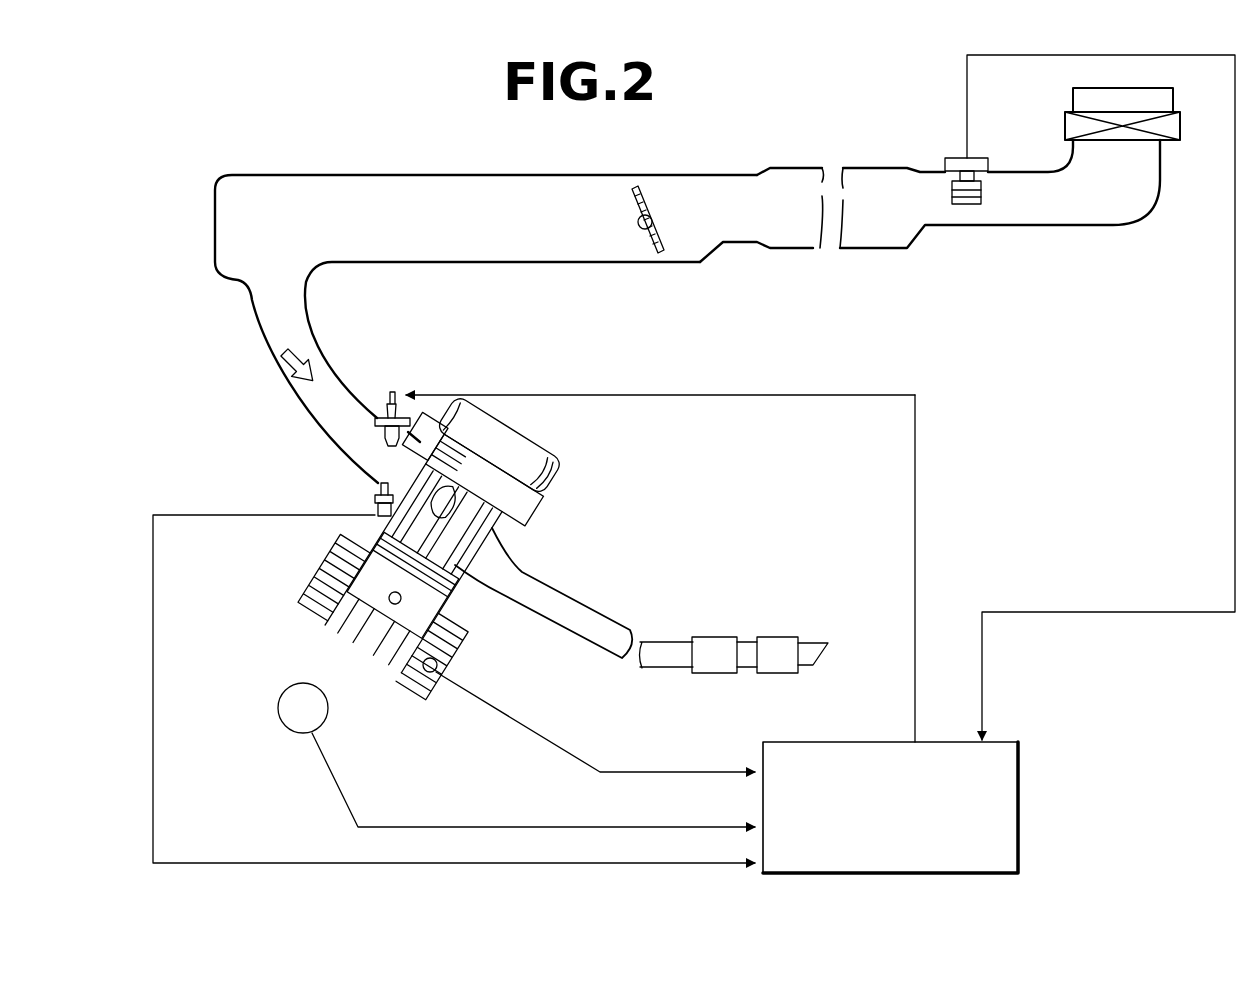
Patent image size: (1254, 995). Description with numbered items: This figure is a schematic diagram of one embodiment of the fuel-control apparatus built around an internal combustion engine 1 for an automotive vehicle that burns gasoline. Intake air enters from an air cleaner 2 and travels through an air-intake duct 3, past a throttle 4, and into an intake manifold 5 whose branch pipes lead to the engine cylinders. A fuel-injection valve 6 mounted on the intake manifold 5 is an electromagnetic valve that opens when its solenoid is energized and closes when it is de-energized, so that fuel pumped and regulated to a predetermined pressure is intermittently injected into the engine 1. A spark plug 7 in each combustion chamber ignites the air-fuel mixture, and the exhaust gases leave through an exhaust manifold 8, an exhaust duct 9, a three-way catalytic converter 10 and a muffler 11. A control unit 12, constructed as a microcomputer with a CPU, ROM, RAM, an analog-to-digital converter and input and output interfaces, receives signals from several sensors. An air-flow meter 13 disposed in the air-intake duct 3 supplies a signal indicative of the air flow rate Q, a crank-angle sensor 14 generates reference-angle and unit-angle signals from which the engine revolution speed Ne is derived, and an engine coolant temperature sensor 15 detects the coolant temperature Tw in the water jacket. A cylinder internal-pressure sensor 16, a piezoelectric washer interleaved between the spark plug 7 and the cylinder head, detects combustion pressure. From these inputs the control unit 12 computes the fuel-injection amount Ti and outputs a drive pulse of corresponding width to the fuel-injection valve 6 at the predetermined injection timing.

The internal combustion engine 1 is at (558, 529).
The air cleaner 2 is at (1180, 125).
The air-intake duct 3 is at (873, 167).
The throttle 4 is at (648, 247).
The intake manifold 5 is at (255, 330).
The fuel-injection valve 6 is at (391, 386).
The spark plug 7 is at (372, 497).
The exhaust manifold 8 is at (562, 598).
The exhaust duct 9 is at (662, 641).
The three-way catalytic converter 10 is at (712, 637).
The muffler 11 is at (782, 637).
The control unit 12 is at (1020, 770).
The air-flow meter 13 is at (955, 157).
The crank-angle sensor 14 is at (278, 698).
The engine coolant temperature sensor 15 is at (440, 661).
The cylinder internal-pressure sensor 16 is at (373, 516).